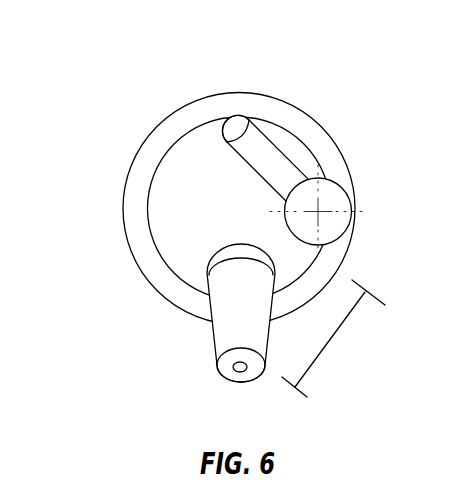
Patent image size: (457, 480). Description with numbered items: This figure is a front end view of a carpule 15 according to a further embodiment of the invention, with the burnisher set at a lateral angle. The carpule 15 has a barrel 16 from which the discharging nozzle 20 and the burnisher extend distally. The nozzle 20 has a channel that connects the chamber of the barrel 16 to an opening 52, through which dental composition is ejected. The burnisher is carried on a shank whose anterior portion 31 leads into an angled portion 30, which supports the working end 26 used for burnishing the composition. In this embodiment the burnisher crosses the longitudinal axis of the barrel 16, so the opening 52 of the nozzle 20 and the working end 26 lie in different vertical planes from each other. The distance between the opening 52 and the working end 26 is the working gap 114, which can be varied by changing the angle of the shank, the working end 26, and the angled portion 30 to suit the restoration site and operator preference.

The carpule 15 is at (94, 103).
The barrel 16 is at (296, 106).
The discharging nozzle 20 is at (215, 350).
The working end 26 is at (355, 208).
The angled portion 30 is at (298, 166).
The anterior portion 31 is at (231, 121).
The opening 52 is at (233, 367).
The working gap 114 is at (347, 320).